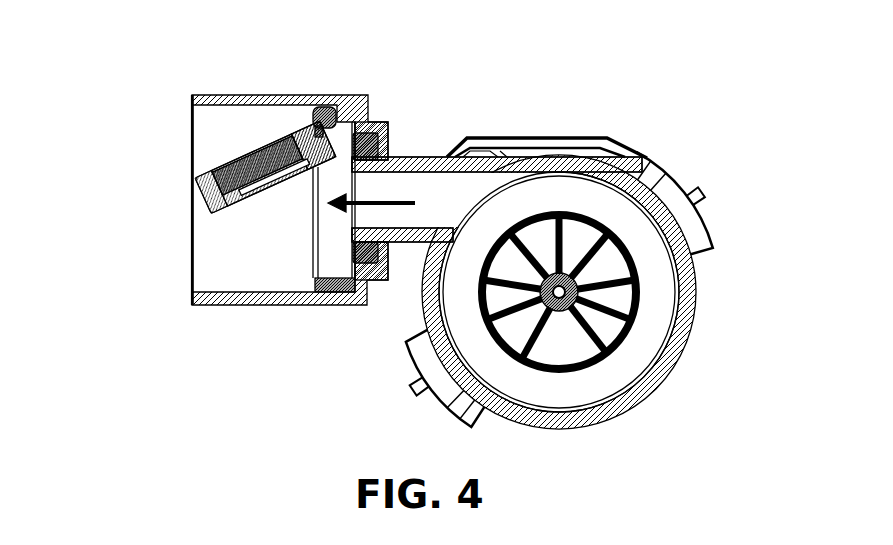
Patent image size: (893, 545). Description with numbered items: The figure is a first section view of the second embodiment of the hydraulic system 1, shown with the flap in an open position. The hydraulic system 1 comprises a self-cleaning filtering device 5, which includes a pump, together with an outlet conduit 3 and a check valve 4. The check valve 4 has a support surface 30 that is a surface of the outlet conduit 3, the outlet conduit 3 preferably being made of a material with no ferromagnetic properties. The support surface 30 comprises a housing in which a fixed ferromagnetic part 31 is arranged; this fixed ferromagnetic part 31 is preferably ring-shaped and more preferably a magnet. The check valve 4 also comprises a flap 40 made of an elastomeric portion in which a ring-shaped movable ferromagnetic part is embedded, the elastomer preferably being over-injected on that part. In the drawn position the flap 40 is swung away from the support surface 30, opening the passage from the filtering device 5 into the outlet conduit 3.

The hydraulic system 1 is at (173, 70).
The outlet conduit 3 is at (268, 93).
The check valve 4 is at (290, 247).
The self-cleaning filtering device 5 is at (667, 375).
The support surface 30 is at (385, 132).
The fixed ferromagnetic part 31 is at (366, 306).
The flap 40 is at (255, 143).